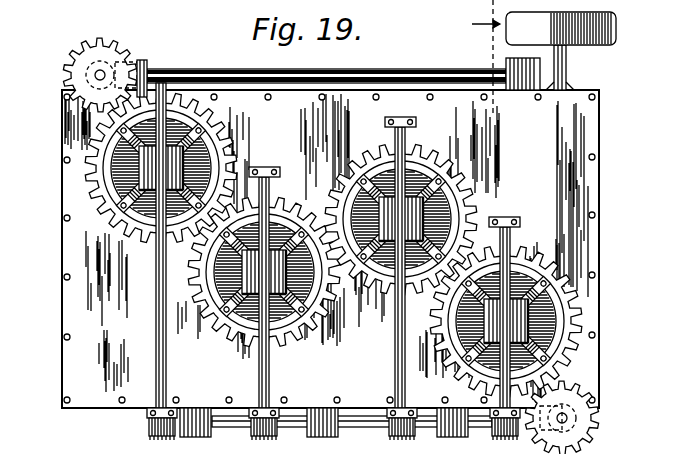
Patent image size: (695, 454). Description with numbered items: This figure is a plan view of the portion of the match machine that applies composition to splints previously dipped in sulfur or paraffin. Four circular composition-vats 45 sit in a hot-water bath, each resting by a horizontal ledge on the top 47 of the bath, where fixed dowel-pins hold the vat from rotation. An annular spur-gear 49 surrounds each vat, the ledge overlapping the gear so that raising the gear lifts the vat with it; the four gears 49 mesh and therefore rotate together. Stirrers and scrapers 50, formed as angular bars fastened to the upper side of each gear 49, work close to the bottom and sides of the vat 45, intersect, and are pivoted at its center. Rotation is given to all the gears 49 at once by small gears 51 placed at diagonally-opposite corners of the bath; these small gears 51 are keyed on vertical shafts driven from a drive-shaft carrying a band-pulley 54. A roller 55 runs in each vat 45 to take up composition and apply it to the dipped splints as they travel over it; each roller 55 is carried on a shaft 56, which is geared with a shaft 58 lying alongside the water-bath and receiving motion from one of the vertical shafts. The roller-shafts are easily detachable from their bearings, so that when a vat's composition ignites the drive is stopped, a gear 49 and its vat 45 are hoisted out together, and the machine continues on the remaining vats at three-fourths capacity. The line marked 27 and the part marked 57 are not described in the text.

The section line 27 is at (487, 57).
The composition-vat 45 is at (210, 160).
The top of the water-bath 47 is at (330, 249).
The annular spur-gear 49 is at (90, 181).
The stirrers and scrapers 50 is at (206, 146).
The small gears 51 is at (94, 56).
The band-pulley 54 is at (561, 51).
The roller 55 is at (150, 206).
The roller shaft 56 is at (158, 305).
The rack pinion 57 is at (150, 425).
The shaft 58 is at (348, 424).